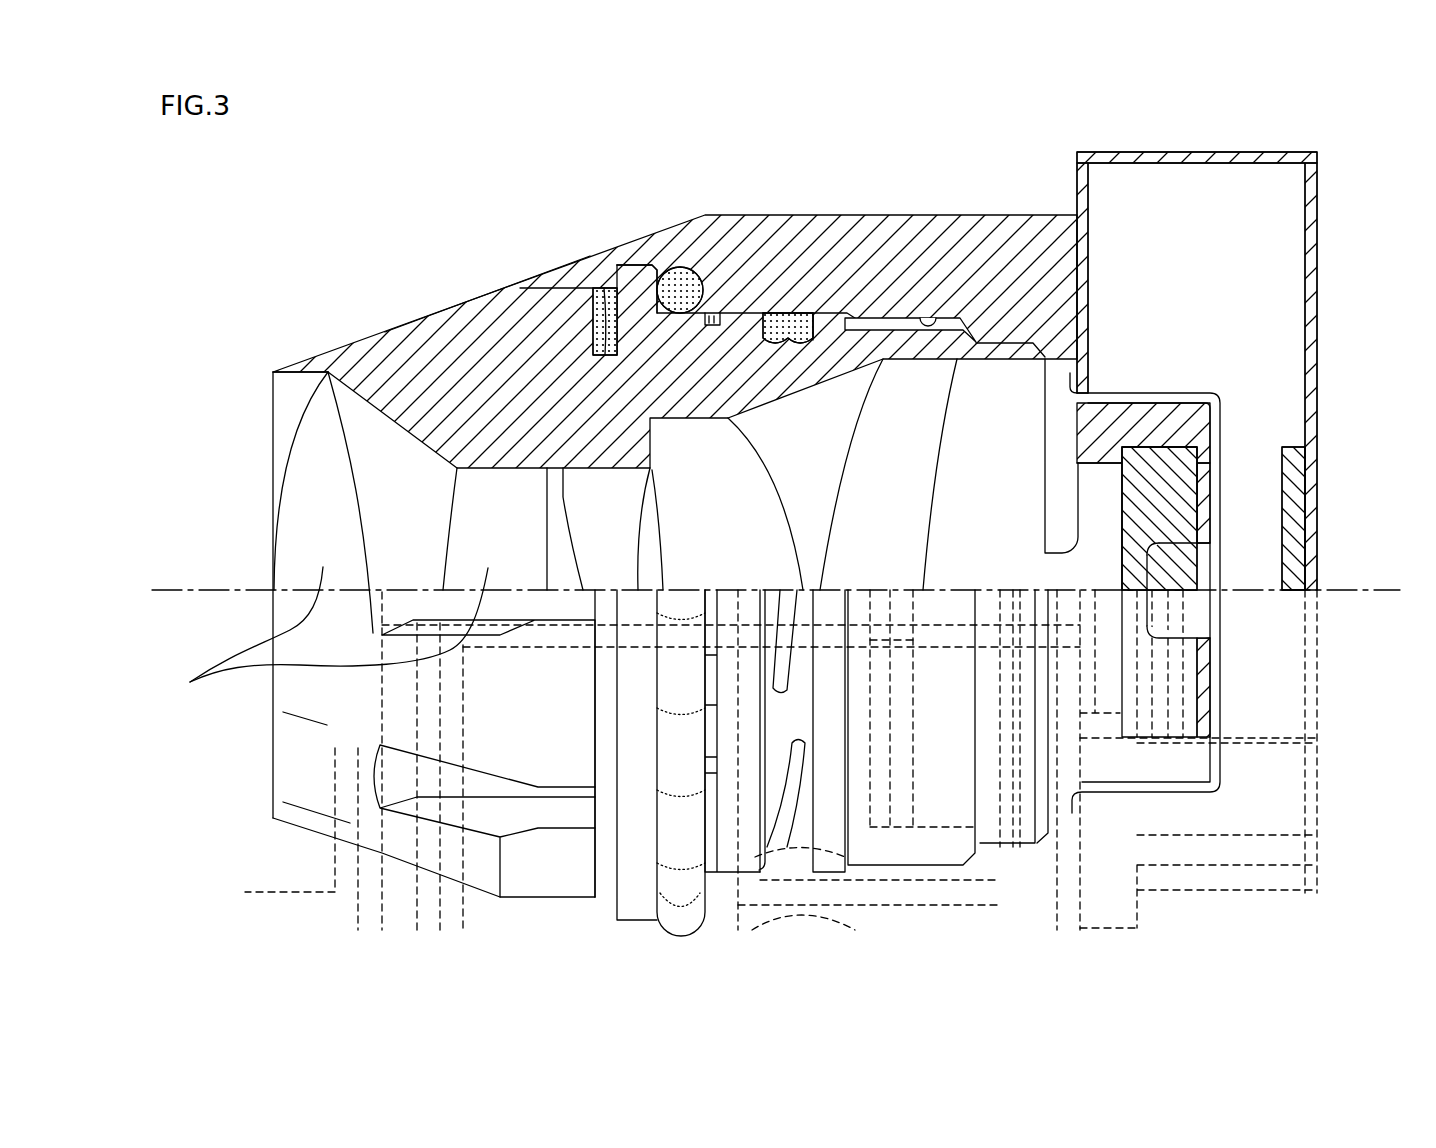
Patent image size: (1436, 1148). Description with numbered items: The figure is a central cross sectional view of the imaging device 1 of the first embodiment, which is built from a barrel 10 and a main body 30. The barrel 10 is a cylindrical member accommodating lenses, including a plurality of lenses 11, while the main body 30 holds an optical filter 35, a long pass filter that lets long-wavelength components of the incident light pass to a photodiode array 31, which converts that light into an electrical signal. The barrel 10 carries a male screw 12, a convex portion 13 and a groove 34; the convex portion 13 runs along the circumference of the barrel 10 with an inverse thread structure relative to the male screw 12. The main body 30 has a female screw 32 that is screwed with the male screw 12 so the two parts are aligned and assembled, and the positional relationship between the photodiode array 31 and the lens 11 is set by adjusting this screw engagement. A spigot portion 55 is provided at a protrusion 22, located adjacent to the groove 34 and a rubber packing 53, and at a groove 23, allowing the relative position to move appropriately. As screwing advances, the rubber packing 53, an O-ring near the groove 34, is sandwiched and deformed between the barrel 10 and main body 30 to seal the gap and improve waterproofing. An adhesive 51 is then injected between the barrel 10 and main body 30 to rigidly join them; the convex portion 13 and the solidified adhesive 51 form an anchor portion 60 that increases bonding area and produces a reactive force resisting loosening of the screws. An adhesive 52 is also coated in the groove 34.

The imaging device 1 is at (1282, 135).
The barrel 10 is at (326, 352).
The lenses 11 is at (322, 638).
The male screw 12 is at (873, 320).
The convex portion 13 is at (788, 312).
The protrusion 22 is at (611, 290).
The groove 23 is at (600, 290).
The main body 30 is at (1134, 151).
The photodiode array 31 is at (1290, 447).
The female screw 32 is at (942, 320).
The groove 34 is at (710, 311).
The optical filter 35 is at (1160, 445).
The adhesive 51 is at (798, 323).
The adhesive 52 is at (680, 266).
The rubber packing 53 is at (655, 262).
The spigot portion 55 is at (559, 231).
The anchor portion 60 is at (829, 230).